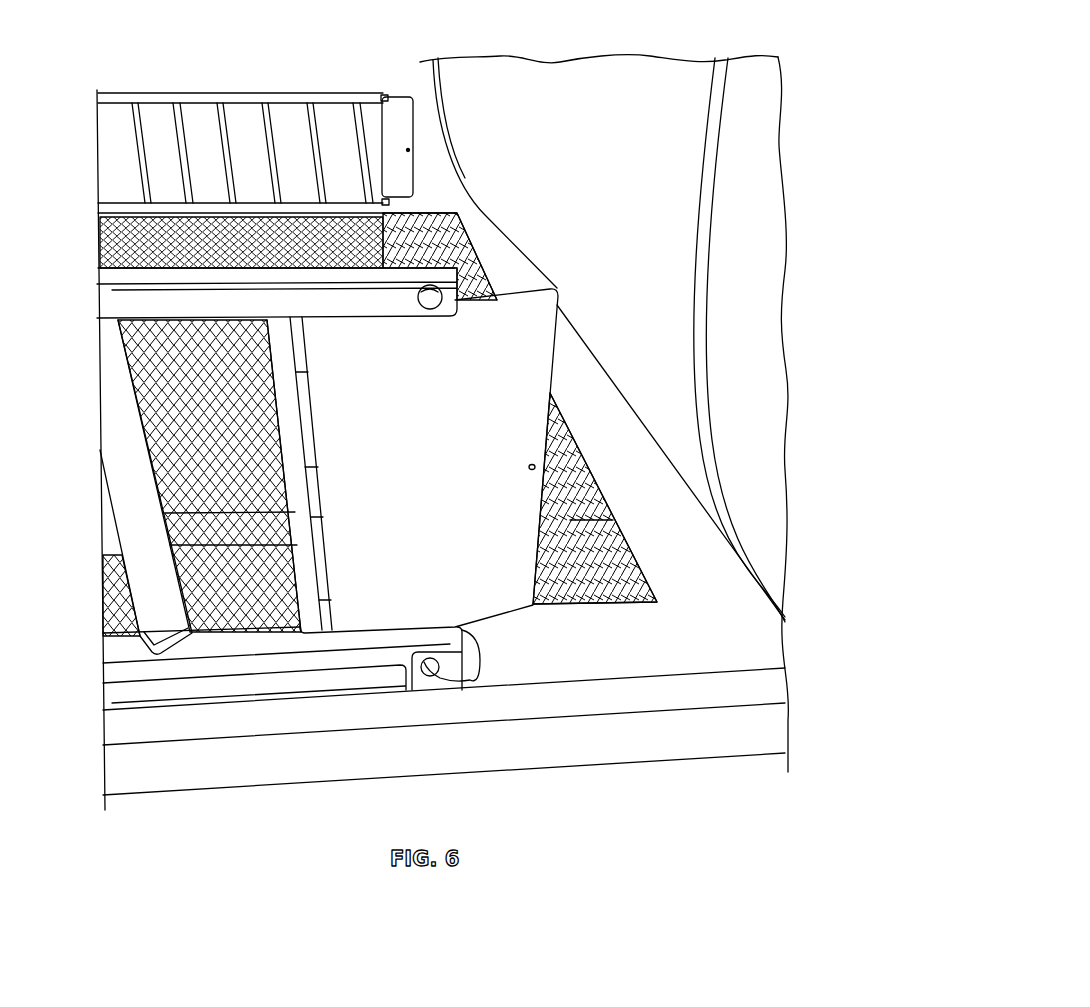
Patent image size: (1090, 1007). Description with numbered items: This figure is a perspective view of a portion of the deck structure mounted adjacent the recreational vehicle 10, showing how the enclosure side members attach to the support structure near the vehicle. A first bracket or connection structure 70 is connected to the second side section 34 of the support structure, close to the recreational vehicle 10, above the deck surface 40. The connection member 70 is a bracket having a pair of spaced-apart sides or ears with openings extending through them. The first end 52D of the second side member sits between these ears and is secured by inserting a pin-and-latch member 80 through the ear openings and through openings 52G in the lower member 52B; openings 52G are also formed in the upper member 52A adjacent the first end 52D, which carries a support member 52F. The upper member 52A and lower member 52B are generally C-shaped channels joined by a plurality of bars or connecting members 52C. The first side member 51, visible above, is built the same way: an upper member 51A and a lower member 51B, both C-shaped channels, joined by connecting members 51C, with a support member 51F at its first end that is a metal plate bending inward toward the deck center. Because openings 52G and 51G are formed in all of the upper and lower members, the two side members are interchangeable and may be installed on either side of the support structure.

The recreational vehicle 10 is at (600, 171).
The second side section 34 is at (288, 762).
The deck surface 40 is at (213, 428).
The first side member 51 is at (274, 191).
The upper member 51A is at (333, 93).
The lower member 51B is at (128, 215).
The connecting members 51C is at (323, 185).
The support member 51F is at (388, 148).
The openings 51G is at (383, 101).
The upper member 52A is at (426, 270).
The lower member 52B is at (233, 643).
The connecting members 52C is at (142, 520).
The first end 52D is at (556, 363).
The support member 52F is at (483, 580).
The openings 52G is at (430, 308).
The connection structure 70 is at (382, 205).
The pin-and-latch member 80 is at (430, 677).